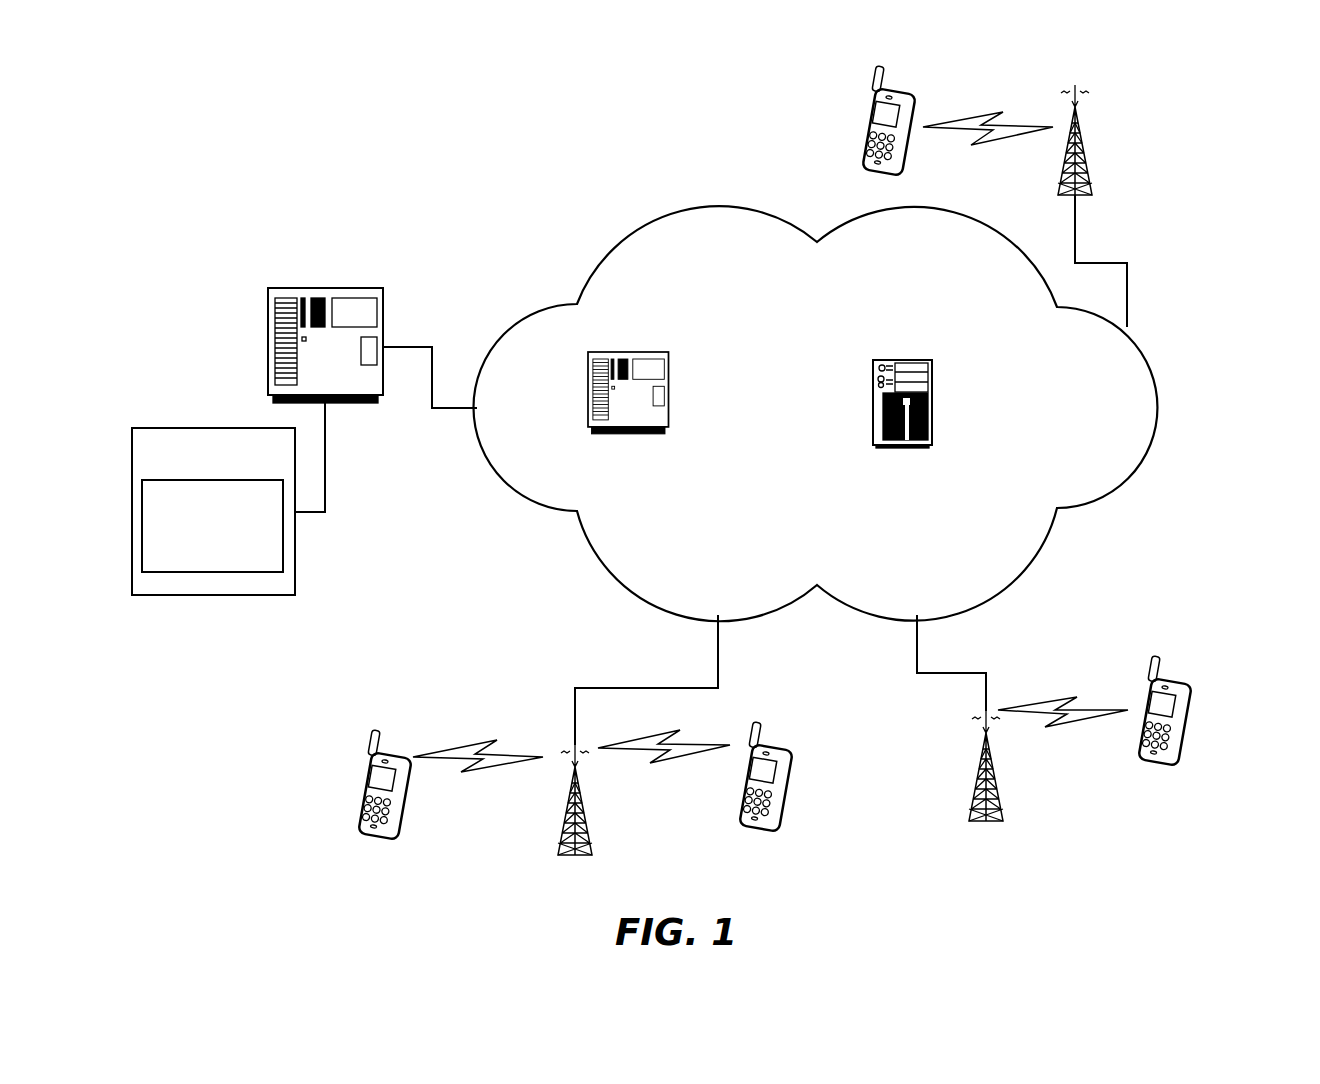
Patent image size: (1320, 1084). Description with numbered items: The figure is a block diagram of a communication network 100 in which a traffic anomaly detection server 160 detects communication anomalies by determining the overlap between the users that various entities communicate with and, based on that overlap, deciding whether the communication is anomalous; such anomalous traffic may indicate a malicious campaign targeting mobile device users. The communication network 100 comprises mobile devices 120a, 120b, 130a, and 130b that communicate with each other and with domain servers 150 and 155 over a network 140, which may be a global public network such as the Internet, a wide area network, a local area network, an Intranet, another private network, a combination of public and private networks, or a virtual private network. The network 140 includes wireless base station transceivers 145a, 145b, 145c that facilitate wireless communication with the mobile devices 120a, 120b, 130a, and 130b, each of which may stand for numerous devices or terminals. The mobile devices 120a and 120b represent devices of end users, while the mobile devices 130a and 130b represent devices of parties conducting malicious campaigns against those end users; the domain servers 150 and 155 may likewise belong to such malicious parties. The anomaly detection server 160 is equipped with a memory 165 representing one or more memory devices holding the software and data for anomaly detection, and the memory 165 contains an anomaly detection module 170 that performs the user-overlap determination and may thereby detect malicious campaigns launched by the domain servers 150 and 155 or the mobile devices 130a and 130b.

The communication network 100 is at (135, 227).
The mobile device 120a is at (360, 780).
The mobile device 120b is at (778, 745).
The mobile device 130a is at (915, 100).
The mobile device 130b is at (1165, 680).
The network 140 is at (816, 413).
The wireless base station transceiver 145a is at (593, 843).
The wireless base station transceiver 145b is at (1090, 185).
The wireless base station transceiver 145c is at (1003, 817).
The domain server 150 is at (587, 397).
The domain server 155 is at (873, 400).
The traffic anomaly detection server 160 is at (325, 287).
The memory 165 is at (213, 511).
The anomaly detection module 170 is at (212, 526).